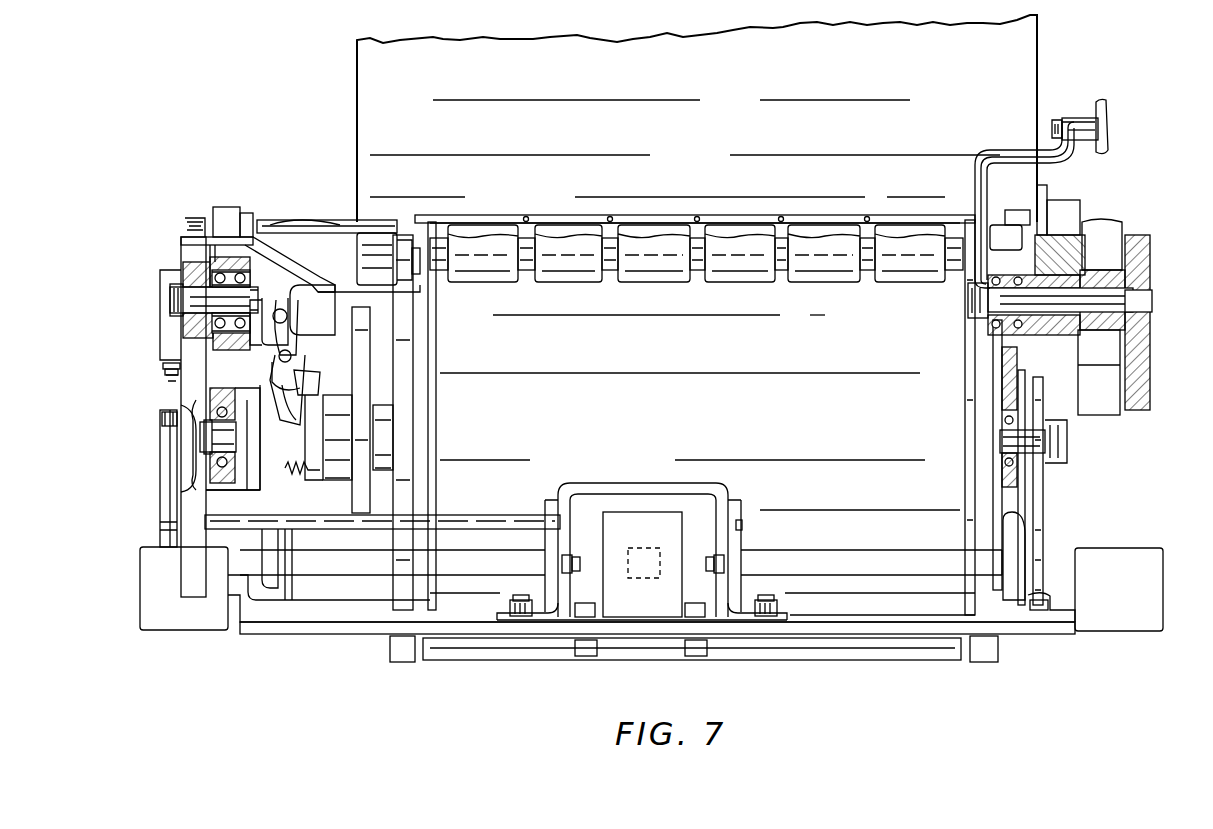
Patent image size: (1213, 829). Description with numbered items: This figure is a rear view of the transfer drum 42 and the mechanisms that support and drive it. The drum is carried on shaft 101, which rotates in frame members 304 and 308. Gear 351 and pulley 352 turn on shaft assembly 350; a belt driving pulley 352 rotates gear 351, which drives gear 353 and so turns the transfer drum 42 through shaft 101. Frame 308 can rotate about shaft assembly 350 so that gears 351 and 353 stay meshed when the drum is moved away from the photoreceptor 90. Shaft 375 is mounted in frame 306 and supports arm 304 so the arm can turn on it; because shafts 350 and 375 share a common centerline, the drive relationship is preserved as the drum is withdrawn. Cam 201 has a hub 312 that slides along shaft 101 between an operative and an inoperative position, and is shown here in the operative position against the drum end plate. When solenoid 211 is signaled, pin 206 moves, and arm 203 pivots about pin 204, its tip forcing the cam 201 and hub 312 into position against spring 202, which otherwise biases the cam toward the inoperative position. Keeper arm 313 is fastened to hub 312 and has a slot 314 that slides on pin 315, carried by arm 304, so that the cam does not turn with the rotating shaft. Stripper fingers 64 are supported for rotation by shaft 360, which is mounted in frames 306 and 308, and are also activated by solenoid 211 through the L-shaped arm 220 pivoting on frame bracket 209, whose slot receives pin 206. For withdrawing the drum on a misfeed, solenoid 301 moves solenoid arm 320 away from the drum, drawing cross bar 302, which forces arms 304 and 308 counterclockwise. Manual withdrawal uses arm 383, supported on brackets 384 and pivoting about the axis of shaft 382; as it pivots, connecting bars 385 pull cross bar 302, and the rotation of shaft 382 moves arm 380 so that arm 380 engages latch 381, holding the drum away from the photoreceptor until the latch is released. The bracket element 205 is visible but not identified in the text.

The photoreceptor 90 is at (357, 115).
The stripper fingers 64 is at (498, 215).
The arm 220 is at (345, 222).
The shaft 360 is at (264, 230).
The frame bracket 209 is at (280, 230).
The pin 206 is at (302, 300).
The shaft 375 is at (172, 300).
The solenoid 211 is at (160, 322).
The arm 203 is at (288, 330).
The pin 204 is at (290, 350).
The slot 314 is at (296, 364).
The keeper arm 313 is at (304, 382).
The hub 312 is at (318, 396).
The pin 315 is at (261, 329).
The shaft assembly 350 is at (1155, 352).
The gear 351 is at (1040, 185).
The pulley 352 is at (1075, 215).
The frame 306 is at (181, 388).
The latch 381 is at (160, 413).
The shaft 101 is at (210, 438).
The frame 308 is at (1092, 410).
The arm 380 is at (162, 472).
The frame member 304 is at (248, 628).
The bracket 205 is at (282, 445).
The spring 202 is at (298, 476).
The cam 201 is at (365, 496).
The arm 383 is at (616, 462).
The solenoid 301 is at (660, 512).
The solenoid arm 320 is at (640, 548).
The connecting bars 385 is at (566, 572).
The gear 353 is at (1038, 500).
The shaft 382 is at (312, 540).
The cross bar 302 is at (375, 572).
The brackets 384 is at (745, 587).
The transfer drum 42 is at (525, 658).